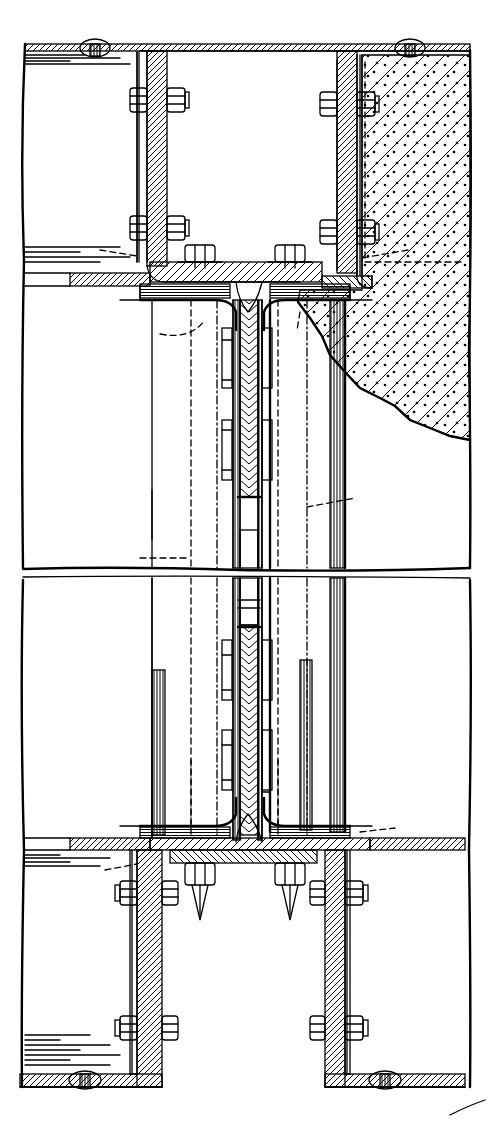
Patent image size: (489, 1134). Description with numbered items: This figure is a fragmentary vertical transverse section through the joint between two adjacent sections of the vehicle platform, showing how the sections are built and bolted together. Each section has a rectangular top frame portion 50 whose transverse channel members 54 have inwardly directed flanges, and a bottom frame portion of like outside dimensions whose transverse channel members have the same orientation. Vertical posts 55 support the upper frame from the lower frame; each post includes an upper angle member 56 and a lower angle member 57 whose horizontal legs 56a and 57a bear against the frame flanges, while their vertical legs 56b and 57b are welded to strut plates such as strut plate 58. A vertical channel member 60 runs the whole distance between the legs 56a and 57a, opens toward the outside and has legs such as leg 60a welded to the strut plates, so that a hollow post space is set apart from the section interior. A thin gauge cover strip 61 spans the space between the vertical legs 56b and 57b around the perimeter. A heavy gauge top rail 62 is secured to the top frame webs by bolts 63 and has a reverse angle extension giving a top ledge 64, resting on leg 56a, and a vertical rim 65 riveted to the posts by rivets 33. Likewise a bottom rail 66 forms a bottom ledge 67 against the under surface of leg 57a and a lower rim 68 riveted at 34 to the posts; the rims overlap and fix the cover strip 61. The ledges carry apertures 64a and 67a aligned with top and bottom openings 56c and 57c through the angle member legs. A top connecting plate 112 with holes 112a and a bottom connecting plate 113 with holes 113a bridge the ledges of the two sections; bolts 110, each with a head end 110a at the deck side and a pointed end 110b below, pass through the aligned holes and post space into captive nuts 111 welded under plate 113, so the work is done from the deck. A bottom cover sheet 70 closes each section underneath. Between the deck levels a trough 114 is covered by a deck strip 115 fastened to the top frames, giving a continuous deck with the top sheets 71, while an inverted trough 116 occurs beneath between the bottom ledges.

The top sheet 71 is at (52, 42).
The deck strip 115 is at (292, 46).
The trough 114 is at (298, 72).
The bolt 63 is at (180, 113).
The top frame portion 50 is at (143, 150).
The transverse channel member 54 is at (146, 177).
The top rail 62 is at (165, 158).
The holes 112a is at (98, 245).
The screw 110a is at (295, 242).
The top ledge 64 is at (212, 262).
The top connecting plate 112 is at (235, 262).
The aperture 64a is at (110, 292).
The horizontal leg 56a is at (140, 301).
The angle member 56 is at (187, 302).
The top opening 56c is at (154, 330).
The vertical channel member 60 is at (165, 349).
The rivet 33 is at (222, 352).
The vertical rim 65 is at (248, 410).
The vertical leg 56b is at (222, 470).
The leg 60a is at (165, 515).
The strut plate 58 is at (232, 533).
The bolt 110 is at (246, 526).
The cover strip 61 is at (240, 608).
The vertical post 55 is at (146, 682).
The rivet 34 is at (220, 750).
The vertical leg 57b is at (278, 726).
The bottom opening 57c is at (150, 798).
The bottom ledge 67 is at (133, 824).
The angle member 57 is at (152, 824).
The horizontal leg 57a is at (138, 830).
The lower rim 68 is at (262, 806).
The holes 113a is at (240, 848).
The aperture 67a is at (236, 868).
The bottom connecting plate 113 is at (228, 890).
The pointed end 110b is at (204, 905).
The nut 111 is at (222, 900).
The bottom rail 66 is at (163, 980).
The bottom cover sheet 70 is at (55, 1088).
The inverted trough 116 is at (225, 1072).